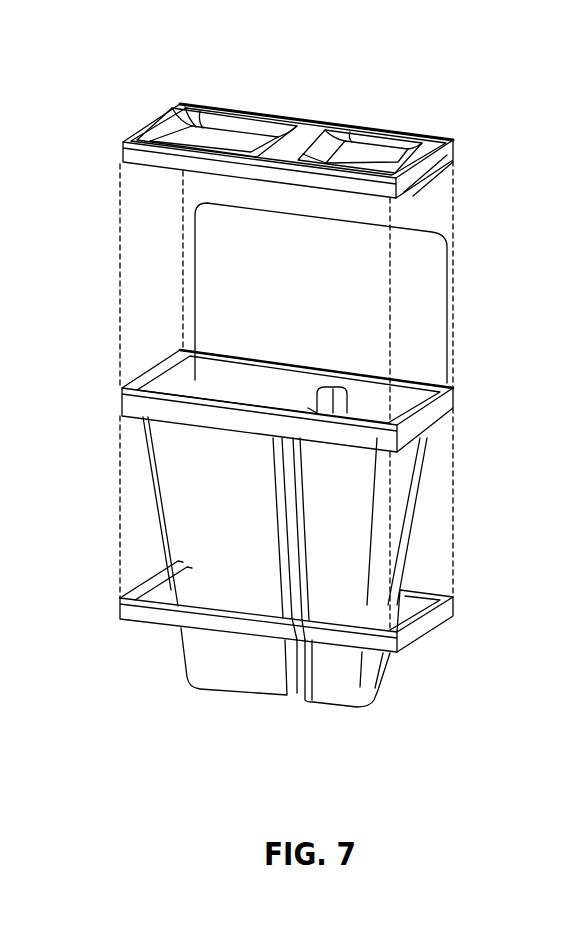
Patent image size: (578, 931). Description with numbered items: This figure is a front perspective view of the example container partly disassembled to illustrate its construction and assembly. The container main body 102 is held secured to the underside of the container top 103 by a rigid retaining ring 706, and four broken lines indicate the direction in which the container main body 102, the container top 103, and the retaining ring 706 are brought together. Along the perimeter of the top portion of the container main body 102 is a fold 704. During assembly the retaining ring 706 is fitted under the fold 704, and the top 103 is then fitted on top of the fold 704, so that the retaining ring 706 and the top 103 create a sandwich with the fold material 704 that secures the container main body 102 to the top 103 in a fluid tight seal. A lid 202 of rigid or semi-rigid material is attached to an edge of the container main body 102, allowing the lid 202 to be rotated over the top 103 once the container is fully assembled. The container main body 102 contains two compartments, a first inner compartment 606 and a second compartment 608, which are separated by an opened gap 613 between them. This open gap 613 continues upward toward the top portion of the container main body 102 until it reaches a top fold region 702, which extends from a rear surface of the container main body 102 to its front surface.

The container top 103 is at (118, 150).
The lid 202 is at (433, 278).
The top fold region 702 is at (318, 386).
The fold 704 is at (445, 406).
The container main body 102 is at (182, 485).
The first inner compartment 606 is at (213, 652).
The second compartment 608 is at (348, 682).
The container gap opening 613 is at (302, 713).
The retaining ring 706 is at (448, 612).